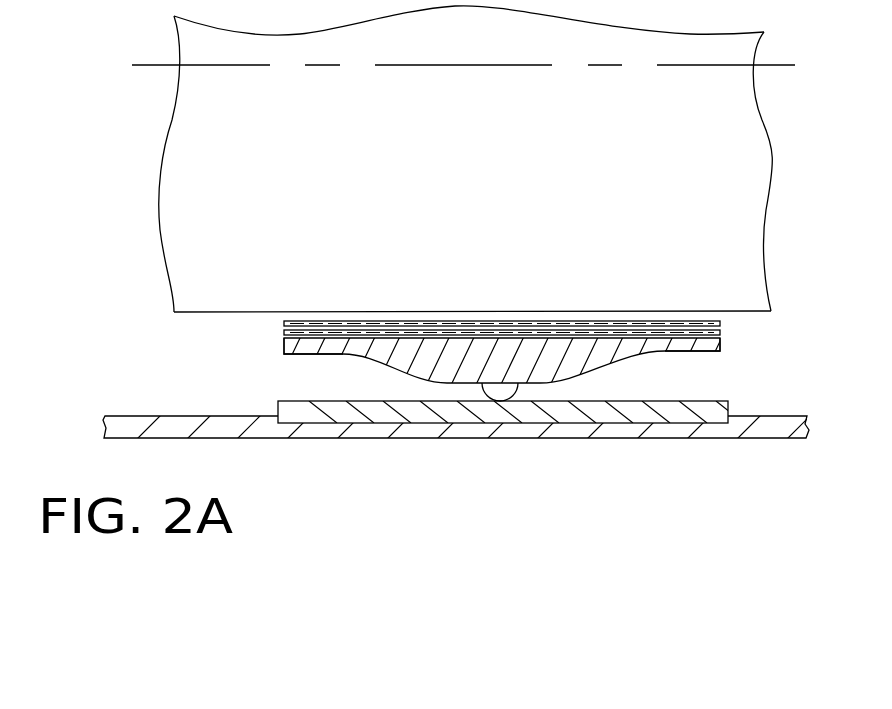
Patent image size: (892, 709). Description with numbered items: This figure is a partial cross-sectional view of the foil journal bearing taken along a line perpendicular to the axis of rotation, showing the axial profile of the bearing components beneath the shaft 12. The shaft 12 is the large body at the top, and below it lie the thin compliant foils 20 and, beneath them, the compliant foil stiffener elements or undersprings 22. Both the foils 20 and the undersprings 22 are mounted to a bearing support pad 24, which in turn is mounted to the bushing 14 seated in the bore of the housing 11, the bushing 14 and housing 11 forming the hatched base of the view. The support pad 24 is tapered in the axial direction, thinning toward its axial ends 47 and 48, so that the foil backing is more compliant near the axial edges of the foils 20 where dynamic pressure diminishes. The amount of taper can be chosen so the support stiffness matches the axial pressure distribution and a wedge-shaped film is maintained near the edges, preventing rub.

The shaft 12 is at (505, 195).
The compliant foils 20 is at (722, 323).
The undersprings 22 is at (284, 331).
The bearing support pads 24 is at (588, 366).
The axial end 47 is at (312, 356).
The axial end 48 is at (704, 348).
The bushing 14 is at (728, 403).
The housing 11 is at (672, 432).